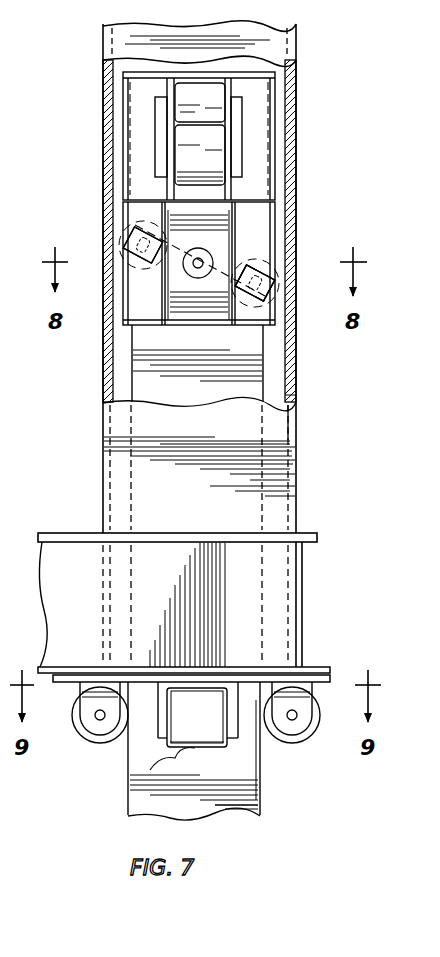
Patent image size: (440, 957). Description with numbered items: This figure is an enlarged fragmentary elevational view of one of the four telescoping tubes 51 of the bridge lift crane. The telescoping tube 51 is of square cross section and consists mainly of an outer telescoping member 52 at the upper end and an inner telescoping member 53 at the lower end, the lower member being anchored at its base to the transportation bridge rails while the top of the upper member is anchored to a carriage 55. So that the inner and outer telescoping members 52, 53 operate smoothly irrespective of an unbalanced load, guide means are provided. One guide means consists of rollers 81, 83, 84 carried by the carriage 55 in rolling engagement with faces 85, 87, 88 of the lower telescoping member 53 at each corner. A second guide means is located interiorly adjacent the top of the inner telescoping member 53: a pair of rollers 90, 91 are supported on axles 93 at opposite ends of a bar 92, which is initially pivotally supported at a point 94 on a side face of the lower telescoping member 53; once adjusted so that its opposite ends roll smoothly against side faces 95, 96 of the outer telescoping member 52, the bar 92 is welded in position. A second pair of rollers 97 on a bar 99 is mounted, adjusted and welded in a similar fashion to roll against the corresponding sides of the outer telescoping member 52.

The telescoping tube 51 is at (303, 58).
The second pair of rollers 97 is at (218, 98).
The bar 99 is at (230, 128).
The side face of outer telescoping member 96 is at (285, 183).
The bar 92 is at (262, 228).
The roller 91 is at (281, 270).
The axles 93 is at (135, 242).
The roller 90 is at (125, 234).
The pivot point 94 is at (198, 268).
The side face of outer telescoping member 95 is at (108, 376).
The inner telescoping member 53 is at (289, 397).
The outer telescoping member 52 is at (289, 430).
The carriage 55 is at (300, 640).
The roller 81 is at (93, 743).
The roller 83 is at (291, 745).
The roller 84 is at (128, 778).
The face of lower telescoping member 85 is at (128, 808).
The face of lower telescoping member 87 is at (260, 790).
The face of lower telescoping member 88 is at (228, 808).